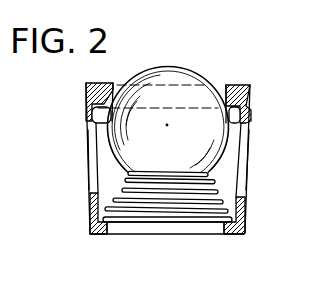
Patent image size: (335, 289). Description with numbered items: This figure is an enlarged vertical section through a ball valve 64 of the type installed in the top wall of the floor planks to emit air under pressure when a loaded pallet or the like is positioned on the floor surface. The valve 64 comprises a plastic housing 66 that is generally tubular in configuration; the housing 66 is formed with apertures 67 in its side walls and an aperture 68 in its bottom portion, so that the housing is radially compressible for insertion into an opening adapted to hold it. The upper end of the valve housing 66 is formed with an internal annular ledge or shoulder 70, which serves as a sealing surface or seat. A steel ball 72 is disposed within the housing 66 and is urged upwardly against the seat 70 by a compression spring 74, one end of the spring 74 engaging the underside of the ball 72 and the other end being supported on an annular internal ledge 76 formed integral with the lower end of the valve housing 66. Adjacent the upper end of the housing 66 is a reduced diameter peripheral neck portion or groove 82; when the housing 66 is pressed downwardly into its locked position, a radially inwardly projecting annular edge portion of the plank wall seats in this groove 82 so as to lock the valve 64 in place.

The ball valve 64 is at (80, 107).
The plastic housing 66 is at (252, 138).
The apertures 67 is at (93, 153).
The aperture 68 is at (155, 230).
The internal annular ledge or shoulder 70 is at (98, 122).
The steel ball 72 is at (171, 69).
The compression spring 74 is at (178, 205).
The annular internal ledge 76 is at (243, 236).
The reduced diameter peripheral neck portion or groove 82 is at (247, 101).